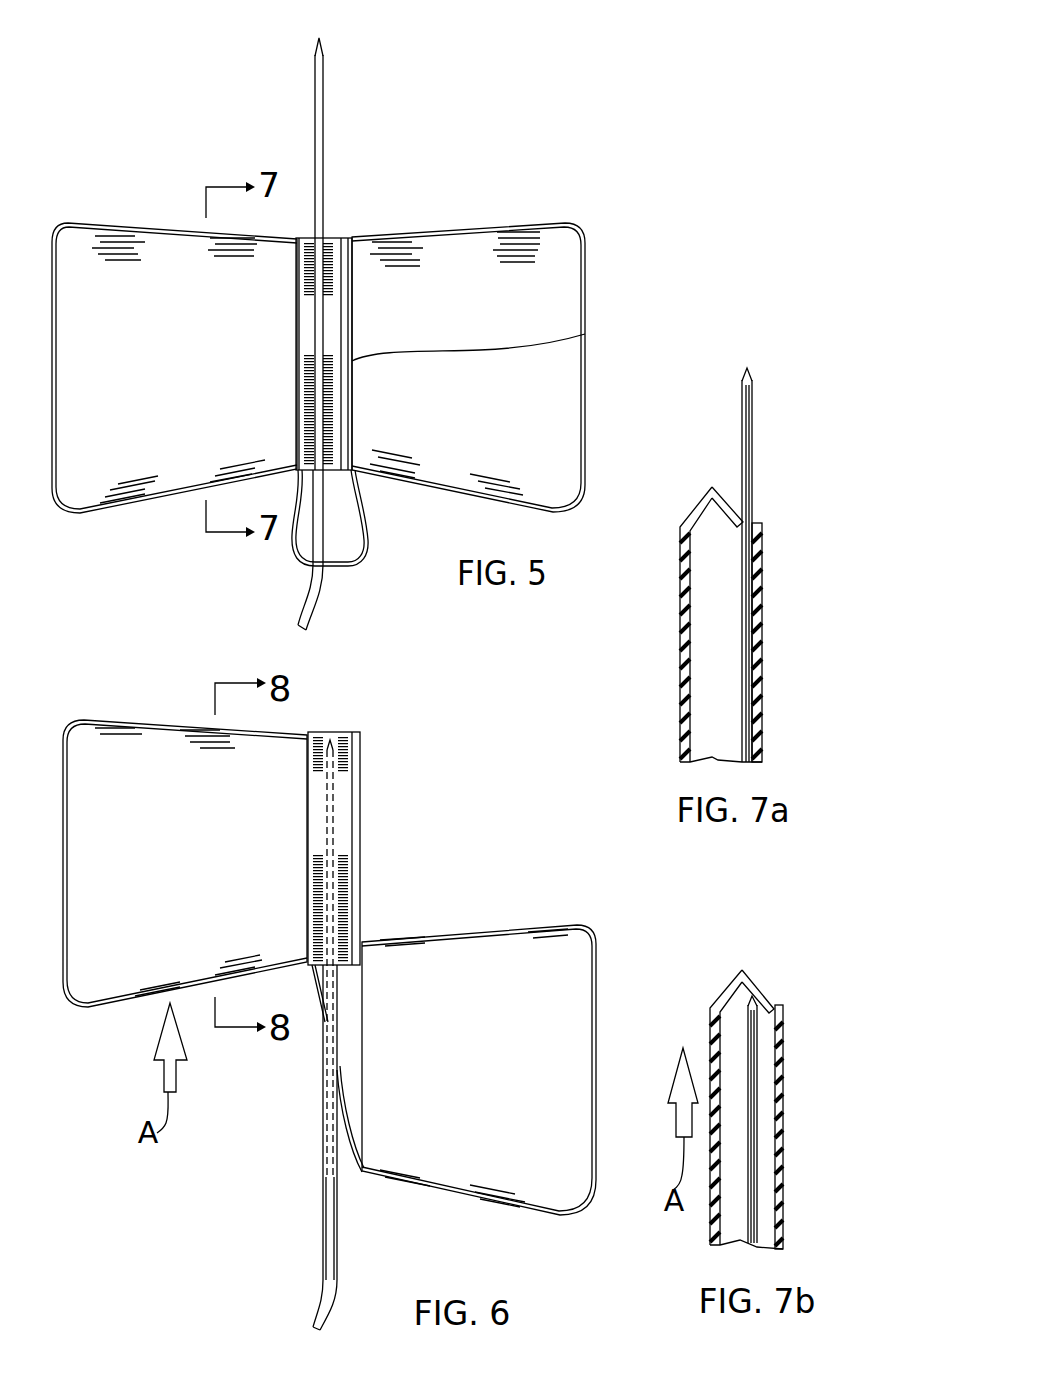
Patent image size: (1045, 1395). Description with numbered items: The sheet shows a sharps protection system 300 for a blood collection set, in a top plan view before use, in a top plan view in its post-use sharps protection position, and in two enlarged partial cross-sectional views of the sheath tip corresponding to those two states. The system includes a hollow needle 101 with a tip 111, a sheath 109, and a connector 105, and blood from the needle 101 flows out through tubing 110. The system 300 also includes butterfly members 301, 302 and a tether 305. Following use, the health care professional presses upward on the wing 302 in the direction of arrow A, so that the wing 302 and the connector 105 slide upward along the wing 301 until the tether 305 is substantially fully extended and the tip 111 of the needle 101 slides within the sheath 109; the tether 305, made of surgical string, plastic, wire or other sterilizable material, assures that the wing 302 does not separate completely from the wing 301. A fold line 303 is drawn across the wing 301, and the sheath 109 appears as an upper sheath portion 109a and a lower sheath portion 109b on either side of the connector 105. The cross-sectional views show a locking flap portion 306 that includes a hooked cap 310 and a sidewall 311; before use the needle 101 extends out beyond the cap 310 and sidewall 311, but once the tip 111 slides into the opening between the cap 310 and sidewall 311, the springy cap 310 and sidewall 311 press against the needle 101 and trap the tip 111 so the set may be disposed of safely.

In FIG. 5, the needle 101 is at (326, 135).
In FIG. 7A, the needle 101 is at (745, 587).
In FIG. 7B, the needle 101 is at (758, 1183).
In FIG. 5, the connector 105 is at (338, 290).
In FIG. 6, the connector 105 is at (346, 755).
In FIG. 5, the sheath 109 is at (322, 258).
In FIG. 7A, the sheath 109 is at (680, 634).
In FIG. 7B, the sheath 109 is at (710, 1037).
In FIG. 6, the upper sheath portion 109a is at (327, 788).
In FIG. 6, the lower sheath portion 109b is at (328, 1152).
In FIG. 5, the tubing 110 is at (313, 618).
In FIG. 6, the tubing 110 is at (325, 1310).
In FIG. 5, the tip 111 is at (321, 38).
In FIG. 6, the tip 111 is at (331, 745).
In FIG. 7A, the tip 111 is at (748, 367).
In FIG. 7B, the tip 111 is at (748, 990).
In FIG. 5, the sharps protection system 300 is at (615, 233).
In FIG. 6, the sharps protection system 300 is at (455, 815).
In FIG. 5, the butterfly member 301 is at (563, 390).
In FIG. 6, the butterfly member 301 is at (557, 976).
In FIG. 5, the butterfly member 302 is at (50, 330).
In FIG. 6, the butterfly member 302 is at (60, 812).
In FIG. 5, the fold line 303 is at (585, 334).
In FIG. 5, the tether 305 is at (365, 563).
In FIG. 6, the tether 305 is at (323, 1008).
In FIG. 7A, the locking flap portion 306 is at (676, 506).
In FIG. 7A, the hooked cap 310 is at (703, 505).
In FIG. 7B, the hooked cap 310 is at (722, 997).
In FIG. 7A, the sidewall 311 is at (763, 533).
In FIG. 7B, the sidewall 311 is at (783, 1035).